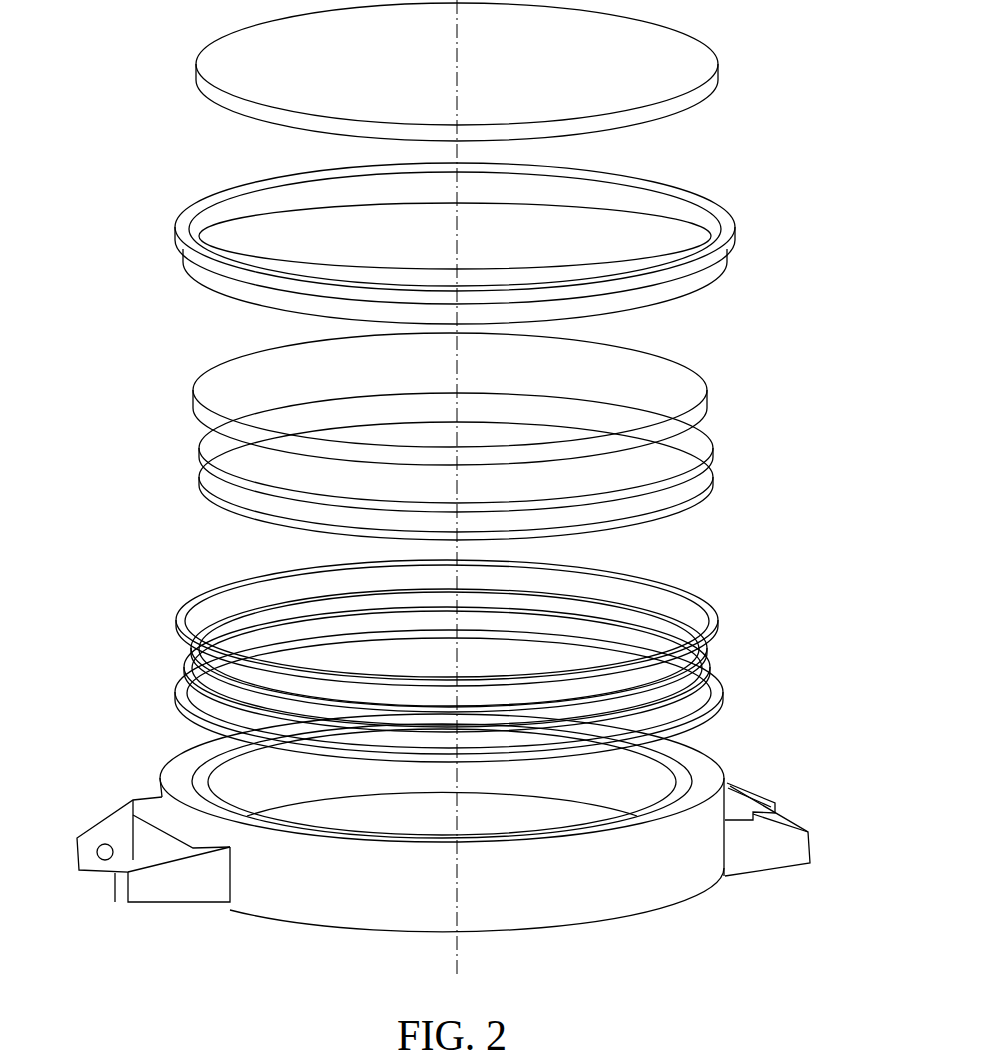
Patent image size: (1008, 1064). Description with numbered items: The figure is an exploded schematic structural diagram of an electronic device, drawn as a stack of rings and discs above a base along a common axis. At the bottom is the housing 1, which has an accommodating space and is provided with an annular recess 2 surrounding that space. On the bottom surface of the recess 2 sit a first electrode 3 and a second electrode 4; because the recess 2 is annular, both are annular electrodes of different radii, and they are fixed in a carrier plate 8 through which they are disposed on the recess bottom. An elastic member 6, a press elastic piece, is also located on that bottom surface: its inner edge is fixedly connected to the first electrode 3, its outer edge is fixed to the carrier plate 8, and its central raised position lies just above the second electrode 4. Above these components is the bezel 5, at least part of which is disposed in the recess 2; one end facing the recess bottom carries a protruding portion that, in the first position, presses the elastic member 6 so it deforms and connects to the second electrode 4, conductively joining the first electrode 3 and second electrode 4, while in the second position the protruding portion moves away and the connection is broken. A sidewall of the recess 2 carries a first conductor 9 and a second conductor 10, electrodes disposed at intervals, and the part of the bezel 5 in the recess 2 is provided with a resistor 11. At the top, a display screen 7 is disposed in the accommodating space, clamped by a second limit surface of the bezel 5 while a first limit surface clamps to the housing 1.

The housing 1 is at (725, 773).
The recess 2 is at (183, 772).
The first electrode 3 is at (712, 663).
The second electrode 4 is at (712, 647).
The bezel 5 is at (710, 268).
The elastic member 6 is at (722, 622).
The display screen 7 is at (707, 100).
The carrier plate 8 is at (724, 713).
The first conductor 9 is at (715, 455).
The second conductor 10 is at (700, 505).
The resistor 11 is at (712, 408).